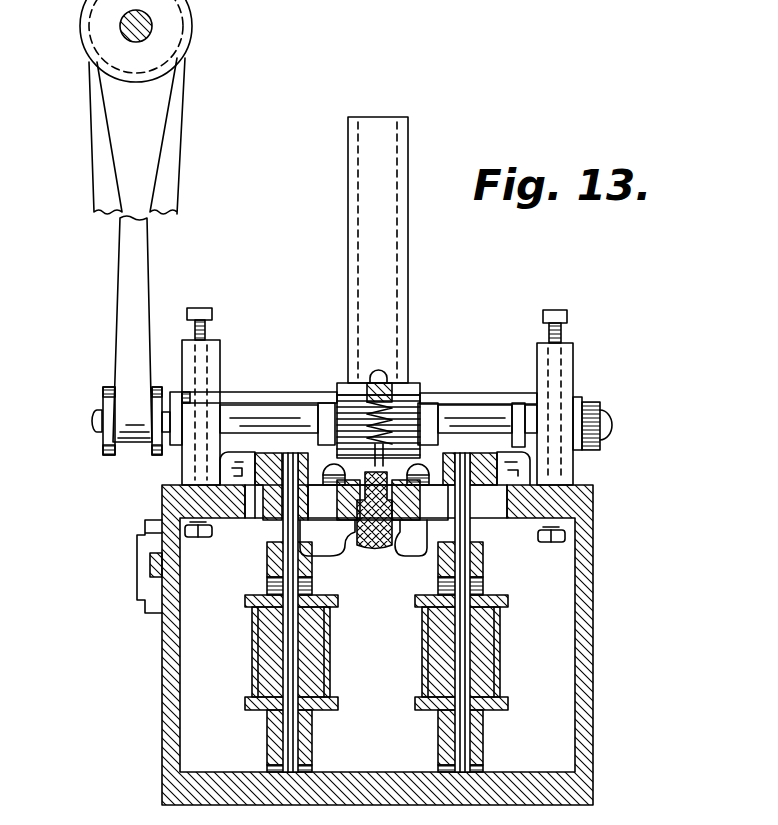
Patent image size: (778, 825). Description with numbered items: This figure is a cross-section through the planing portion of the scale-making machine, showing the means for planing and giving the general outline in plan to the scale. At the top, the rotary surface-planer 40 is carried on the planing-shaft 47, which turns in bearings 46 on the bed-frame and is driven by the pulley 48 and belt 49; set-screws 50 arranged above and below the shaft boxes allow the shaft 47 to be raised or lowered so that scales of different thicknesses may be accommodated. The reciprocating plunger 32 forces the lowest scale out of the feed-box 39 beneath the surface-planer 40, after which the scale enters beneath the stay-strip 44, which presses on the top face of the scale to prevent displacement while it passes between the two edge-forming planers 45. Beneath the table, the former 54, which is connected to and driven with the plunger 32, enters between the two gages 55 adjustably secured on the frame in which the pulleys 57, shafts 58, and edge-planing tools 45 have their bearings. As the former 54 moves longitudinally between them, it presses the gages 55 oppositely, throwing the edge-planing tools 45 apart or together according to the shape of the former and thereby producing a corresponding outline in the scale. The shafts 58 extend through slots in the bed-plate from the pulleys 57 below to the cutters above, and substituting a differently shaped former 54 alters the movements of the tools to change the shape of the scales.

The reciprocating plunger 32 is at (337, 500).
The feed-box 39 is at (404, 288).
The rotary surface-planer 40 is at (390, 398).
The stay-strip 44 is at (376, 456).
The edge-forming planers 45 is at (268, 447).
The bearings 46 is at (230, 424).
The planing-shaft 47 is at (262, 418).
The pulley 48 is at (107, 435).
The belt 49 is at (132, 329).
The set-screws 50 is at (565, 337).
The former 54 is at (377, 548).
The gages 55 is at (340, 548).
The pulleys 57 is at (245, 599).
The shafts 58 is at (465, 567).